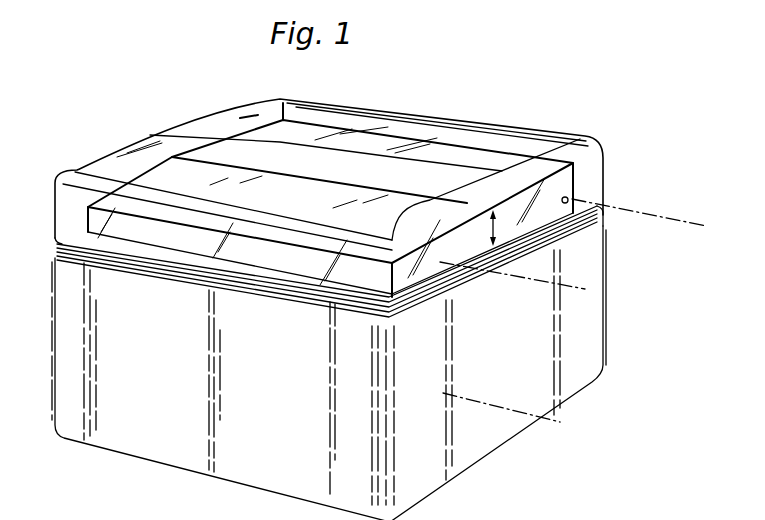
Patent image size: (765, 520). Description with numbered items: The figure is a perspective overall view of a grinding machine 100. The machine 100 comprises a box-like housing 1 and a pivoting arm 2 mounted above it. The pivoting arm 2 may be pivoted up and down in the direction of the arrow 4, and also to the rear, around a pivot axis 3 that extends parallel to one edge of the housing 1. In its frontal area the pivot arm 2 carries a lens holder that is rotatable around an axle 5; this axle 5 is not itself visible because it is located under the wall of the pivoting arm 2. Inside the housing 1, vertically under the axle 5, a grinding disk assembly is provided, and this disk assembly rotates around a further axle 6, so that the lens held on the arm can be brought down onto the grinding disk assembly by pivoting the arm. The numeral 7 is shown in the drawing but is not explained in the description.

The grinding machine 100 is at (618, 118).
The housing 1 is at (605, 345).
The pivoting arm 2 is at (462, 170).
The pivot axis 3 is at (662, 216).
The arrow 4 is at (497, 232).
The axle 5 is at (565, 285).
The axle 6 is at (557, 422).
The transparent hood 7 is at (409, 113).